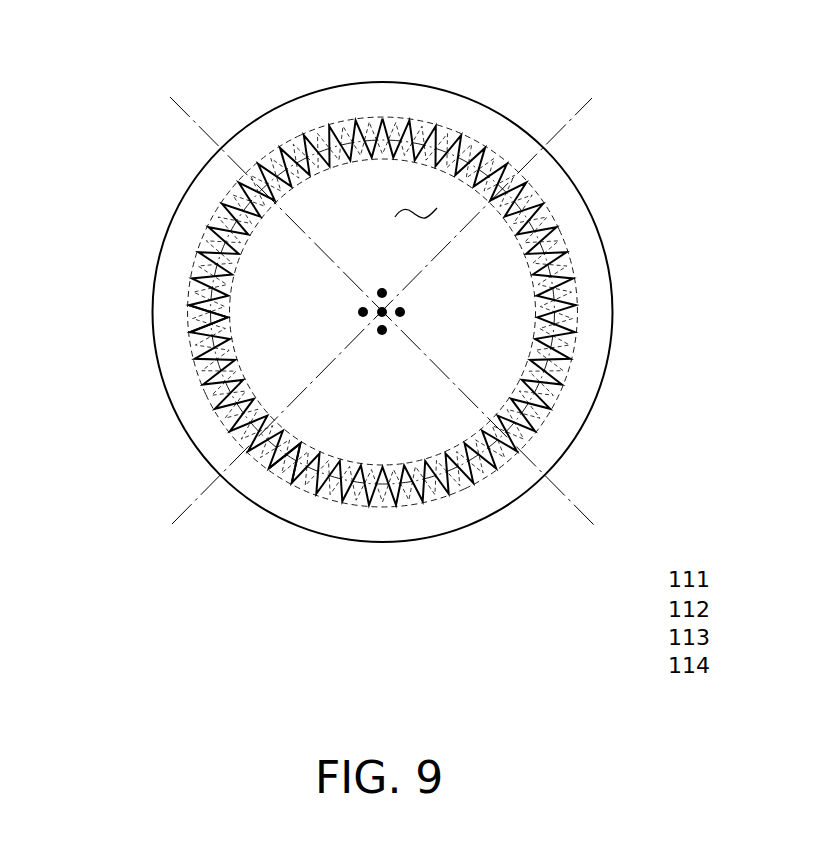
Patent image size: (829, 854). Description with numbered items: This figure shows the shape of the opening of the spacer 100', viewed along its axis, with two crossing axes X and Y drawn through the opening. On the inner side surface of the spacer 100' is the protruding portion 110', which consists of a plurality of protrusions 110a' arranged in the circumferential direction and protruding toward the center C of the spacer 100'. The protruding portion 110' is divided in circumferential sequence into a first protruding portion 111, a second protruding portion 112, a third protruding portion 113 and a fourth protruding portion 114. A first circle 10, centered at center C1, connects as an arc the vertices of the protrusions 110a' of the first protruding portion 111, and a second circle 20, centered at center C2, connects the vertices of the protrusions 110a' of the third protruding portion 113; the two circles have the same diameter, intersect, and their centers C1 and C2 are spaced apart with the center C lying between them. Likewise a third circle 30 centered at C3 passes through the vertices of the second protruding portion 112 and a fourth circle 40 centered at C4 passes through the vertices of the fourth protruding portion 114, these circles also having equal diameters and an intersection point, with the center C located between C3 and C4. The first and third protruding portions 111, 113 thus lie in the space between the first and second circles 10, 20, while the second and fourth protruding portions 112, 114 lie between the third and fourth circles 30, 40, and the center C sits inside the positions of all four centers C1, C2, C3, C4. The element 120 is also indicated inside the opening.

The spacer 100' is at (343, 312).
The first circle 10 is at (188, 302).
The second circle 20 is at (563, 238).
The third circle 30 is at (403, 118).
The fourth circle 40 is at (287, 470).
The protruding portion 110' is at (425, 392).
The protrusion 110a' is at (248, 302).
The first protruding portion 111 is at (565, 256).
The second protruding portion 112 is at (403, 495).
The third protruding portion 113 is at (192, 350).
The fourth protruding portion 114 is at (362, 118).
The inner ring 120 is at (417, 212).
The center of the spacer C is at (382, 312).
The center of the first circle C1 is at (363, 312).
The center of the second circle C2 is at (400, 314).
The center of the third circle C3 is at (382, 293).
The center of the fourth circle C4 is at (382, 330).
The X axis X is at (390, 299).
The Y axis Y is at (389, 325).